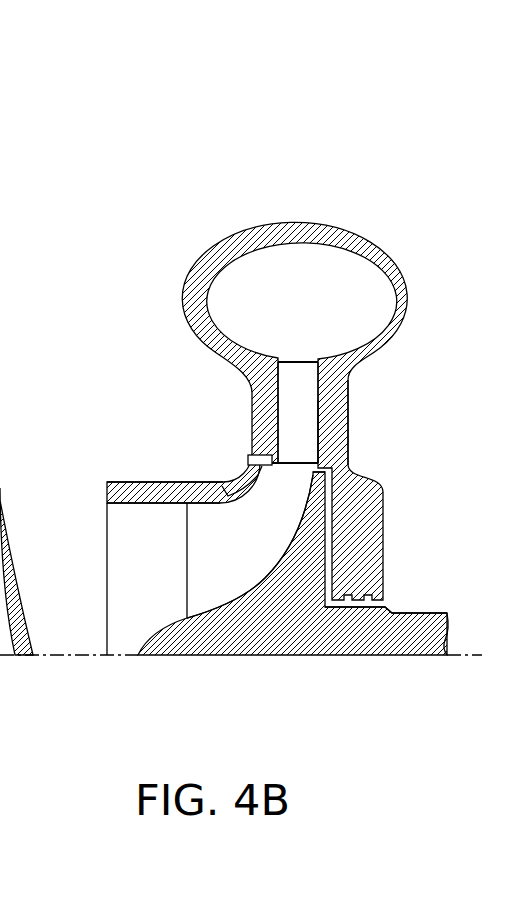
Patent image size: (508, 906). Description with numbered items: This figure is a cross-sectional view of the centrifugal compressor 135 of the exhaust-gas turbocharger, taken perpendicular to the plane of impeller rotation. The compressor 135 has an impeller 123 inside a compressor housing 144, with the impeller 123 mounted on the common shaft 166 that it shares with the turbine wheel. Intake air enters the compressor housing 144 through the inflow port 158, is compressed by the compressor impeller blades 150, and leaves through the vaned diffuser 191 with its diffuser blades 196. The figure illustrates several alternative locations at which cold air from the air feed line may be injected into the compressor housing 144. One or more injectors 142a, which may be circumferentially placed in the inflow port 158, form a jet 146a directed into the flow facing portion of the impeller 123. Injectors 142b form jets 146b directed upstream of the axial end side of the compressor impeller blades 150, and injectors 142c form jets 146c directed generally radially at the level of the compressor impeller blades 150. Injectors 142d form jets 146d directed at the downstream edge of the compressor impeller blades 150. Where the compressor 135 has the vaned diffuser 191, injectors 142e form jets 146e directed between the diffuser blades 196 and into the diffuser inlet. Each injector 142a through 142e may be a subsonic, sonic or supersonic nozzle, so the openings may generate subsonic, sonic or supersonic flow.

The compressor 135 is at (248, 155).
The compressor housing 144 is at (352, 222).
The vaned diffuser 191 is at (305, 358).
The diffuser blades 196 is at (303, 402).
The jet 146e is at (295, 390).
The jet 146d is at (281, 473).
The jet 146c is at (228, 510).
The jet 146b is at (187, 538).
The jet 146a is at (158, 522).
The injector 142a is at (152, 513).
The injector 142b is at (190, 524).
The injector 142c is at (166, 482).
The injector 142d is at (217, 527).
The injector 142e is at (248, 462).
The compressor impeller blades 150 is at (180, 587).
The inflow port 158 is at (115, 590).
The common shaft 166 is at (397, 610).
The impeller 123 is at (150, 610).